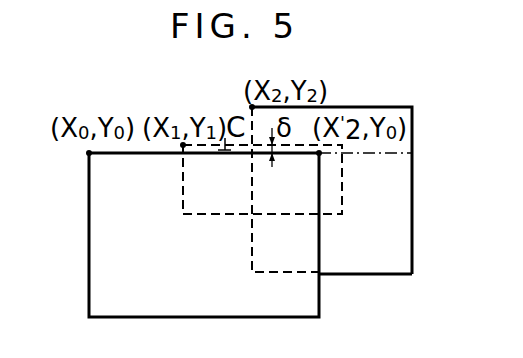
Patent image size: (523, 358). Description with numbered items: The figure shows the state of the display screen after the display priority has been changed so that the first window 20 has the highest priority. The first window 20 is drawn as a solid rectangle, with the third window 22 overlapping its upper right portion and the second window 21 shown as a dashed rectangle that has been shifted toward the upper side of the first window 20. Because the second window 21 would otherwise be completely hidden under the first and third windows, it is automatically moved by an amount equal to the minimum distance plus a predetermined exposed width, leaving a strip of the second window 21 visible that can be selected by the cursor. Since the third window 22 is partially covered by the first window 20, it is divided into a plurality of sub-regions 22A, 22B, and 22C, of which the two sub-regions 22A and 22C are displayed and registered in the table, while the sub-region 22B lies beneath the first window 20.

The first window 20 is at (96, 249).
The second window 21 is at (211, 145).
The third window 22 is at (413, 209).
The sub-region 22A is at (403, 144).
The sub-region 22B is at (305, 266).
The sub-region 22C is at (392, 249).